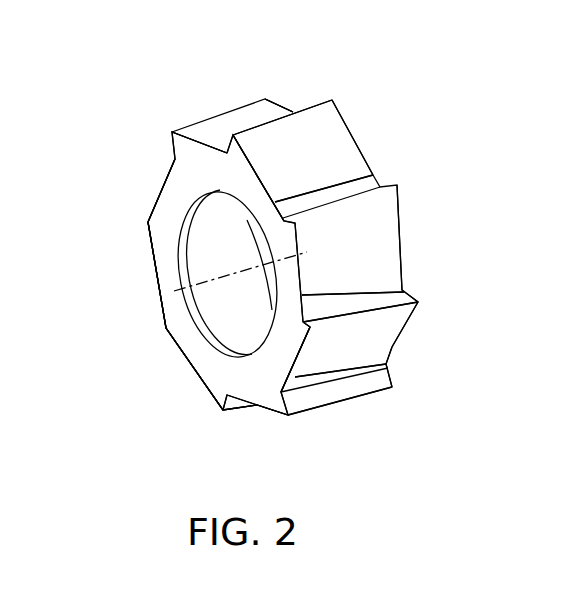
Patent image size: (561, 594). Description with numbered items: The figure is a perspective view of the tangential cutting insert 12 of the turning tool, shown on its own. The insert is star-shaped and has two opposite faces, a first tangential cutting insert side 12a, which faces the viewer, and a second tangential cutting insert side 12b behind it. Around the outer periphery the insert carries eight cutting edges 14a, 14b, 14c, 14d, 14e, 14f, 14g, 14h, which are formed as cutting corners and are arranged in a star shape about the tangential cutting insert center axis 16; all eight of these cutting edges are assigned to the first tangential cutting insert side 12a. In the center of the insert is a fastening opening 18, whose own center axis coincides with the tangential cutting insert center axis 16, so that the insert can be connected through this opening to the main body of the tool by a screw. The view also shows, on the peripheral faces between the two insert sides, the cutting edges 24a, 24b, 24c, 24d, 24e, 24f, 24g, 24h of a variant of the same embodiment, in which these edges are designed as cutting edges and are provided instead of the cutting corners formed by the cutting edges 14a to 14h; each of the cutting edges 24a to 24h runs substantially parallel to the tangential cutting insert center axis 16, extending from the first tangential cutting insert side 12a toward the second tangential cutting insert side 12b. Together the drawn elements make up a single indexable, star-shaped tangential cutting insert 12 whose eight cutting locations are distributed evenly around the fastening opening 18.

The tangential cutting insert 12 is at (423, 168).
The first tangential cutting insert side 12a is at (178, 182).
The second tangential cutting insert side 12b is at (373, 160).
The cutting edge 14a is at (170, 130).
The cutting edge 14b is at (147, 213).
The cutting edge 14c is at (166, 333).
The cutting edge 14d is at (221, 414).
The cutting edge 14e is at (289, 413).
The cutting edge 14f is at (313, 330).
The cutting edge 14g is at (296, 219).
The cutting edge 14h is at (236, 128).
The tangential cutting insert center axis 16 is at (200, 262).
The fastening opening 18 is at (235, 312).
The cutting edge 24a is at (209, 106).
The cutting edge 24b is at (138, 223).
The cutting edge 24c is at (158, 324).
The cutting edge 24d is at (247, 414).
The cutting edge 24e is at (368, 394).
The cutting edge 24f is at (392, 318).
The cutting edge 24g is at (367, 203).
The cutting edge 24h is at (308, 102).